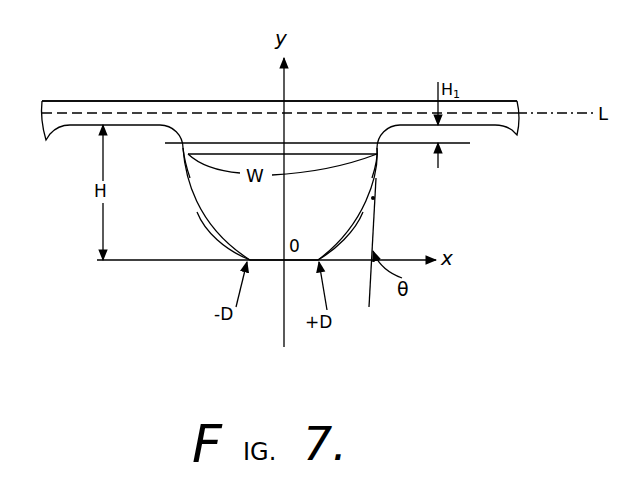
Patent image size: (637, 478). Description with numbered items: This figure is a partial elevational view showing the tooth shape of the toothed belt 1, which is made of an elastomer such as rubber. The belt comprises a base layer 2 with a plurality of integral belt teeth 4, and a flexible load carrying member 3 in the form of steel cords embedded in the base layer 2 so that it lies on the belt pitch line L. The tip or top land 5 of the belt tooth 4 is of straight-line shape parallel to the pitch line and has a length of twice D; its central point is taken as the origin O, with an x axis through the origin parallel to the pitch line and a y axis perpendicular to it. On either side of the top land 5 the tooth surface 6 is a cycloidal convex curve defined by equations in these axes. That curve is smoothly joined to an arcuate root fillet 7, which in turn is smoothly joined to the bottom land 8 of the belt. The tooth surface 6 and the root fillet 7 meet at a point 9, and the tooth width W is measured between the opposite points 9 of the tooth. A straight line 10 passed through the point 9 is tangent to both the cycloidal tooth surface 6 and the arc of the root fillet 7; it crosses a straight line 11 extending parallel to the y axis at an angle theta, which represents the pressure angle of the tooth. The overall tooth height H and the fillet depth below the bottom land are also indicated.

The toothed belt 1 is at (481, 33).
The base layer 2 is at (103, 101).
The load carrying member 3 is at (152, 113).
The belt tooth 4 is at (205, 199).
The top land 5 is at (270, 262).
The tooth surface 6 is at (206, 231).
The root fillet 7 is at (184, 136).
The bottom land 8 is at (480, 125).
The point of intersection 9 is at (188, 156).
The straight line 10 is at (375, 232).
The straight line parallel to the y axis 11 is at (370, 250).